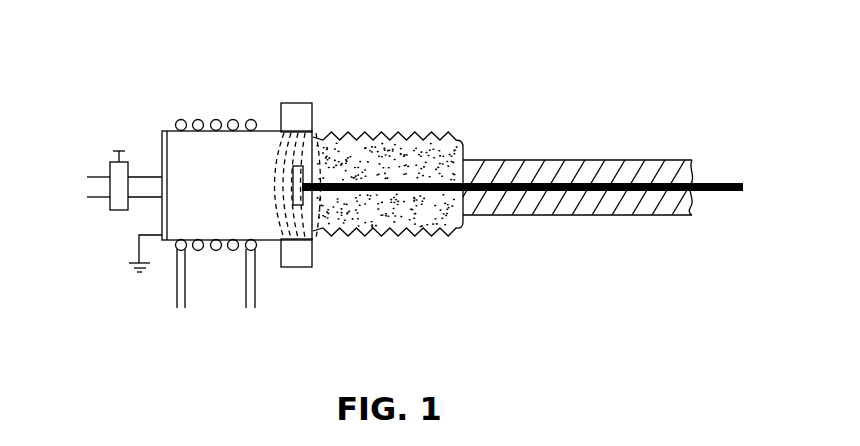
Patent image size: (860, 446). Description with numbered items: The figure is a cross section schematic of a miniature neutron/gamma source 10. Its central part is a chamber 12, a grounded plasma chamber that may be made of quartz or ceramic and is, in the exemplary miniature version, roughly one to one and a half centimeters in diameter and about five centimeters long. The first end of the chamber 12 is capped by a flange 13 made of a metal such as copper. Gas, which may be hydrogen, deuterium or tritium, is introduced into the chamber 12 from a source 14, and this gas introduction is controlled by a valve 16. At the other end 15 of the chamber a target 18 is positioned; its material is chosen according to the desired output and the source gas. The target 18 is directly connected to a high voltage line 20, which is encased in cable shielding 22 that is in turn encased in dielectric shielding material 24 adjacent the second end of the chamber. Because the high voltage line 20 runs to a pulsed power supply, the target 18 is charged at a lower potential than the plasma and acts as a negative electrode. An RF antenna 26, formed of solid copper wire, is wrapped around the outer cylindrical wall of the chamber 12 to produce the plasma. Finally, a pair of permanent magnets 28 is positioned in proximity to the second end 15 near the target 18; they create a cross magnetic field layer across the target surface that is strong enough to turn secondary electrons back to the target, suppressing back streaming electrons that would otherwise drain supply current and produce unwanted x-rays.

The miniature neutron/gamma source 10 is at (172, 103).
The chamber 12 is at (270, 243).
The flange 13 is at (160, 210).
The source 14 is at (90, 187).
The second end of the chamber 15 is at (313, 213).
The valve 16 is at (118, 211).
The target 18 is at (300, 160).
The high voltage line 20 is at (722, 179).
The cable shielding 22 is at (578, 160).
The dielectric shielding material 24 is at (455, 131).
The RF antenna 26 is at (178, 310).
The permanent magnets 28 is at (296, 102).